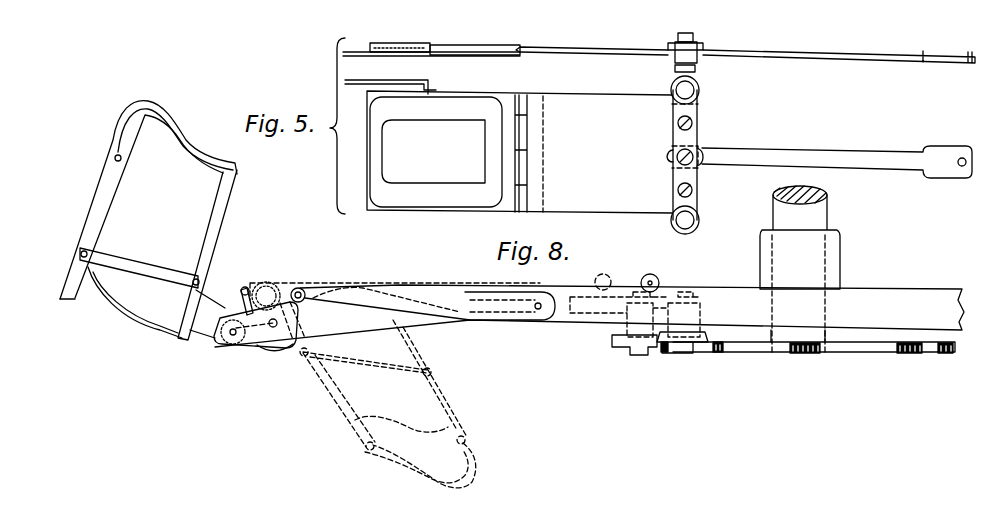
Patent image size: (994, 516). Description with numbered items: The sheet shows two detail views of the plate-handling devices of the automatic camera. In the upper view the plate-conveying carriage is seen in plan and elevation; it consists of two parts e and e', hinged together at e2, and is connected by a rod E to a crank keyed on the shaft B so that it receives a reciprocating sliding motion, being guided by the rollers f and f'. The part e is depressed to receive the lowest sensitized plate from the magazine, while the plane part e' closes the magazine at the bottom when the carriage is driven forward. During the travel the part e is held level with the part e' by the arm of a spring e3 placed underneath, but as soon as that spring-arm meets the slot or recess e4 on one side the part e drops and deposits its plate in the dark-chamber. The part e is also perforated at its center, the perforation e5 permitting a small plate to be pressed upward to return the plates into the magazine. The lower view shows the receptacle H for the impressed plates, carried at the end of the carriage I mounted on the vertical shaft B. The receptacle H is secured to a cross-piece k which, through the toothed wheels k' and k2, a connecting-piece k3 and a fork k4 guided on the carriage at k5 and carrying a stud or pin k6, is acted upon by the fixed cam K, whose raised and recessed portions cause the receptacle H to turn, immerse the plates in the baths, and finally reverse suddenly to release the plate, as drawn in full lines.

In FIG. 8, the receptacle H is at (268, 294).
In FIG. 8, the carriage I is at (589, 315).
In FIG. 8, the fixed cam K is at (876, 360).
In FIG. 5, the shaft B is at (800, 269).
In FIG. 5, the rod E is at (800, 52).
In FIG. 5, the roller f is at (674, 55).
In FIG. 5, the roller f' is at (694, 155).
In FIG. 5, the carriage part e is at (519, 121).
In FIG. 5, the carriage part e' is at (620, 95).
In FIG. 5, the hinge e2 is at (538, 50).
In FIG. 5, the spring e3 is at (360, 70).
In FIG. 5, the slot or recess e4 is at (436, 51).
In FIG. 5, the perforation e5 is at (484, 55).
In FIG. 8, the cross-piece k is at (207, 329).
In FIG. 8, the toothed wheel k' is at (257, 321).
In FIG. 8, the toothed wheel k2 is at (272, 294).
In FIG. 8, the connecting-piece k3 is at (303, 291).
In FIG. 8, the fork k4 is at (577, 296).
In FIG. 8, the guide k5 is at (515, 315).
In FIG. 8, the stud or pin k6 is at (668, 353).